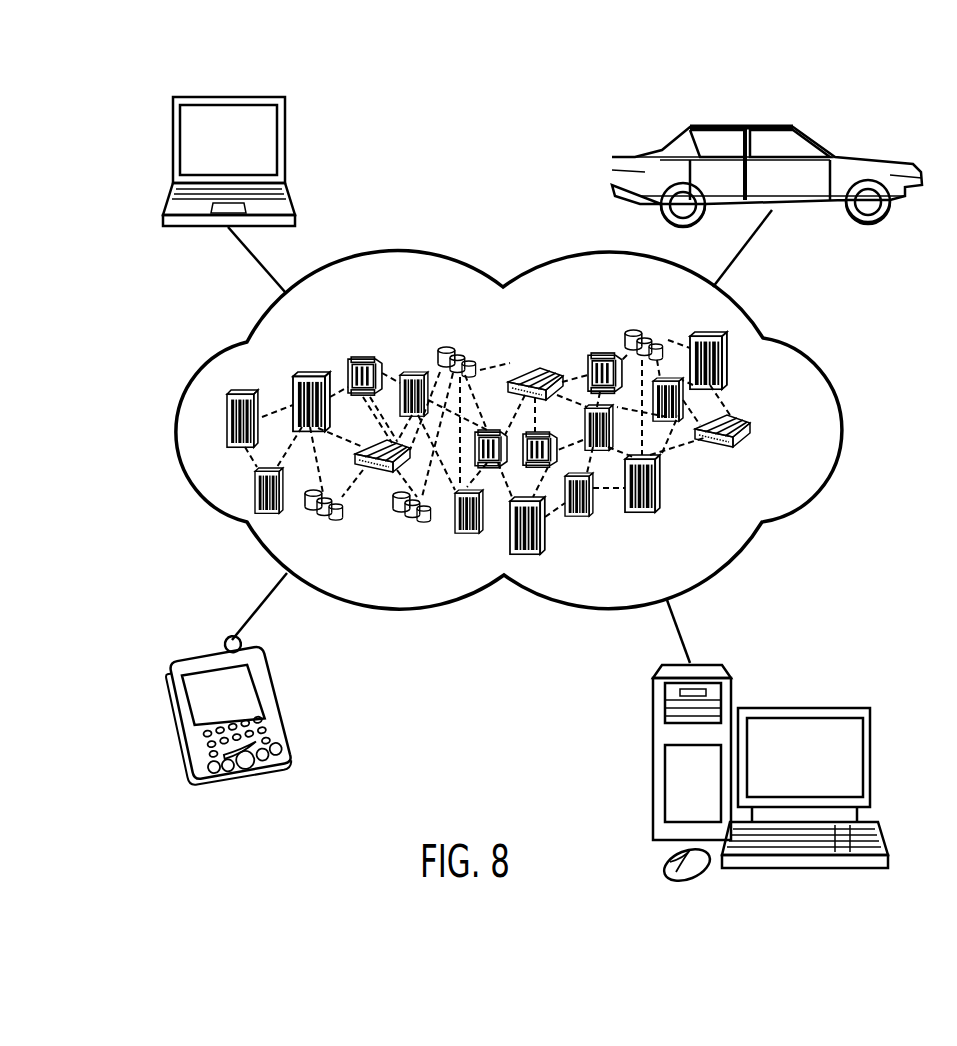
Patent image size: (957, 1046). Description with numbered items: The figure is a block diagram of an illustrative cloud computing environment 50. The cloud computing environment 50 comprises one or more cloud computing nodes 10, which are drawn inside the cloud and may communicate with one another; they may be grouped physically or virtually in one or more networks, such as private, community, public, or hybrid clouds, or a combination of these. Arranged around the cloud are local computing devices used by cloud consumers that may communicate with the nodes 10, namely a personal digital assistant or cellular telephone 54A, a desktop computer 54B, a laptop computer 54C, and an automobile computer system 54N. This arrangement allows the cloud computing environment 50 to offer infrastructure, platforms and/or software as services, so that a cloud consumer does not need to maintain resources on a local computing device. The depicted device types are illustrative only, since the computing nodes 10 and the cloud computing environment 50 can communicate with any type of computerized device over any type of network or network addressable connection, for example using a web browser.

The cloud computing environment 50 is at (817, 347).
The cloud computing node 10 is at (762, 431).
The personal digital assistant or cellular telephone 54A is at (211, 650).
The desktop computer 54B is at (803, 708).
The laptop computer 54C is at (228, 96).
The automobile computer system 54N is at (745, 127).